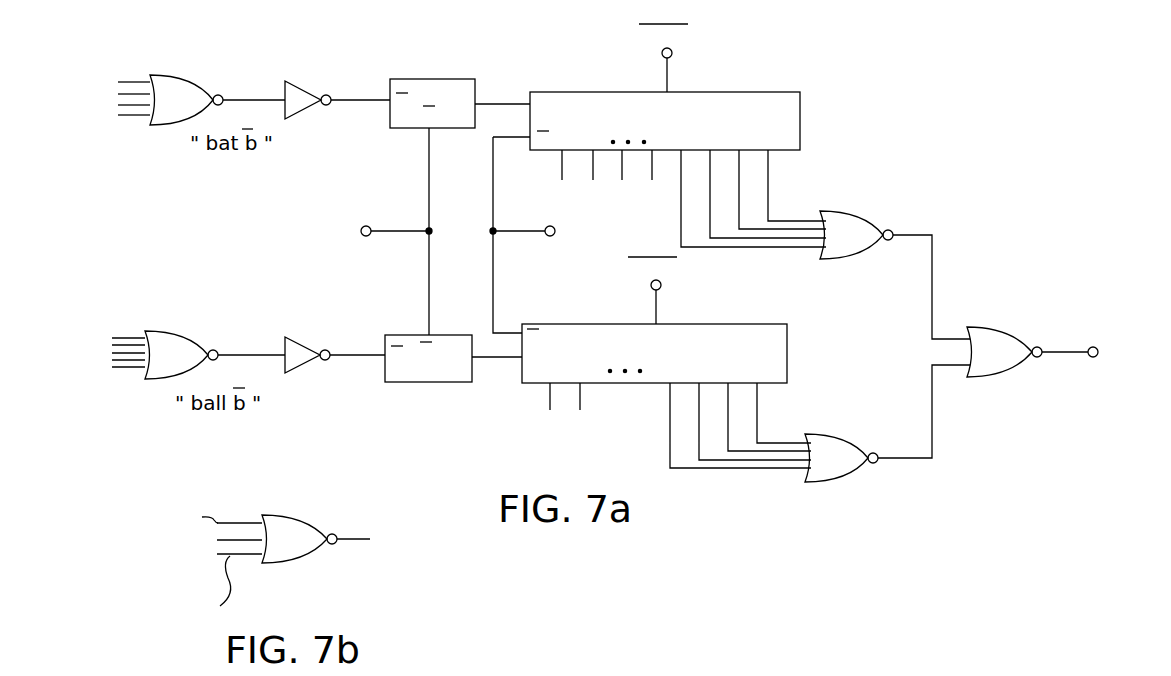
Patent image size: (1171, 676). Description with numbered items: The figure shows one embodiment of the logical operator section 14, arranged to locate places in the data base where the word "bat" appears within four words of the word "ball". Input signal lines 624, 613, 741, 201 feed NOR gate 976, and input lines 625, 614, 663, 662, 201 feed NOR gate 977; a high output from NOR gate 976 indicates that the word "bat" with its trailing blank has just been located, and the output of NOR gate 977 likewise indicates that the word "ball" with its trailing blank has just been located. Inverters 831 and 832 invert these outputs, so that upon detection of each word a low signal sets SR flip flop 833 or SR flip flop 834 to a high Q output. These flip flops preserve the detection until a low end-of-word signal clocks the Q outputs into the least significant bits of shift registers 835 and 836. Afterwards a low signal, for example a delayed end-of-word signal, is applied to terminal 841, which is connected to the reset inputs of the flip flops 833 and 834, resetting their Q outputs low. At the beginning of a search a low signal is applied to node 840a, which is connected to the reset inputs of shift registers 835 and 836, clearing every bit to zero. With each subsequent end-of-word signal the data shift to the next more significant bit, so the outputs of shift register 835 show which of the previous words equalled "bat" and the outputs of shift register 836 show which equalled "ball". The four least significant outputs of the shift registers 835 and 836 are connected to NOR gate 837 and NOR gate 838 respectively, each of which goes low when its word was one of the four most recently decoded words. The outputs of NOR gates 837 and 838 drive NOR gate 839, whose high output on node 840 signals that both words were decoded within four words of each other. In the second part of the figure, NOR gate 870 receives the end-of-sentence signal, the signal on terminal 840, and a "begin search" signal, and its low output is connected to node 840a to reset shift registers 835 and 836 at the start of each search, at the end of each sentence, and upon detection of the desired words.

In FIG. 7A, the logical operator section 14 is at (140, 423).
In FIG. 7A, the input signal 201 is at (118, 116).
In FIG. 7A, the input signal 613 is at (118, 94).
In FIG. 7A, the input signal 614 is at (114, 344).
In FIG. 7A, the input signal 624 is at (118, 81).
In FIG. 7A, the input signal 625 is at (118, 336).
In FIG. 7A, the input signal 662 is at (114, 361).
In FIG. 7A, the input signal 663 is at (114, 353).
In FIG. 7A, the input signal 741 is at (118, 105).
In FIG. 7A, the inverter 831 is at (320, 56).
In FIG. 7A, the inverter 832 is at (323, 318).
In FIG. 7A, the SR flip flop 833 is at (446, 79).
In FIG. 7A, the SR flip flop 834 is at (455, 383).
In FIG. 7A, the shift register 835 is at (776, 92).
In FIG. 7A, the shift register 836 is at (762, 323).
In FIG. 7A, the NOR gate 837 is at (873, 218).
In FIG. 7A, the NOR gate 838 is at (853, 433).
In FIG. 7A, the NOR gate 839 is at (1007, 328).
In FIG. 7A, the node 840 is at (1097, 351).
In FIG. 7B, the node 840 is at (217, 540).
In FIG. 7A, the node 840a is at (556, 222).
In FIG. 7B, the node 840a is at (382, 542).
In FIG. 7A, the terminal 841 is at (365, 226).
In FIG. 7B, the NOR gate 870 is at (338, 503).
In FIG. 7A, the NOR gate 976 is at (214, 50).
In FIG. 7A, the NOR gate 977 is at (206, 313).